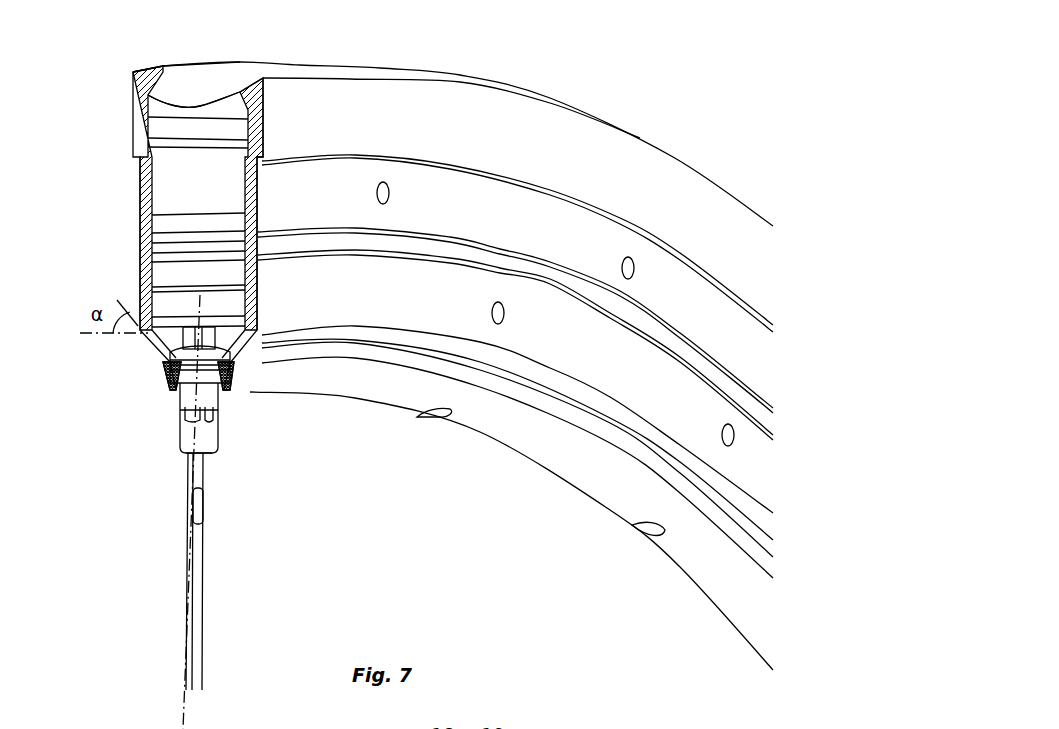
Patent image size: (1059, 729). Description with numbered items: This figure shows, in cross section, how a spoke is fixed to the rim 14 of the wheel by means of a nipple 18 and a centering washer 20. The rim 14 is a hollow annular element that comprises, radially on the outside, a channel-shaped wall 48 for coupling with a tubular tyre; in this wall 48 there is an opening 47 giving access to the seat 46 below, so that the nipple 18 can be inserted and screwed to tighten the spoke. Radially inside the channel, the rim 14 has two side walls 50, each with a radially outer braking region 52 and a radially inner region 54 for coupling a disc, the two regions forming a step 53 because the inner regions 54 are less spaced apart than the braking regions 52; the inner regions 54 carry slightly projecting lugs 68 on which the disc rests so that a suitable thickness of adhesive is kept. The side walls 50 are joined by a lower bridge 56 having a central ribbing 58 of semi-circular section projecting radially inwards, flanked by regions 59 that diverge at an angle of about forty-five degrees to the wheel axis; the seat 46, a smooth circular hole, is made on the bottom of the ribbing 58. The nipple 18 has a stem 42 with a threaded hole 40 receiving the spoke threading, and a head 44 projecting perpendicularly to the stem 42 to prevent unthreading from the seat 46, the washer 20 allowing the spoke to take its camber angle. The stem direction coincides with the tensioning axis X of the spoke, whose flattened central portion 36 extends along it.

The rim 14 is at (527, 498).
The nipple 18 is at (240, 431).
The centering washer 20 is at (167, 368).
The central portion of the spoke stem 36 is at (200, 573).
The threaded hole 40 is at (217, 450).
The stem of the nipple 42 is at (182, 410).
The head of the nipple 44 is at (167, 360).
The seat 46 is at (435, 410).
The opening 47 is at (183, 102).
The channel-shaped wall 48 is at (167, 75).
The side wall 50 is at (112, 107).
The radially outer braking region 52 is at (133, 120).
The step 53 is at (135, 160).
The radially inner region 54 is at (140, 200).
The lower bridge 56 is at (153, 381).
The central ribbing 58 is at (173, 382).
The diverging region 59 is at (257, 357).
The lug 68 is at (528, 274).
The longitudinal axis of the spoke X is at (193, 598).